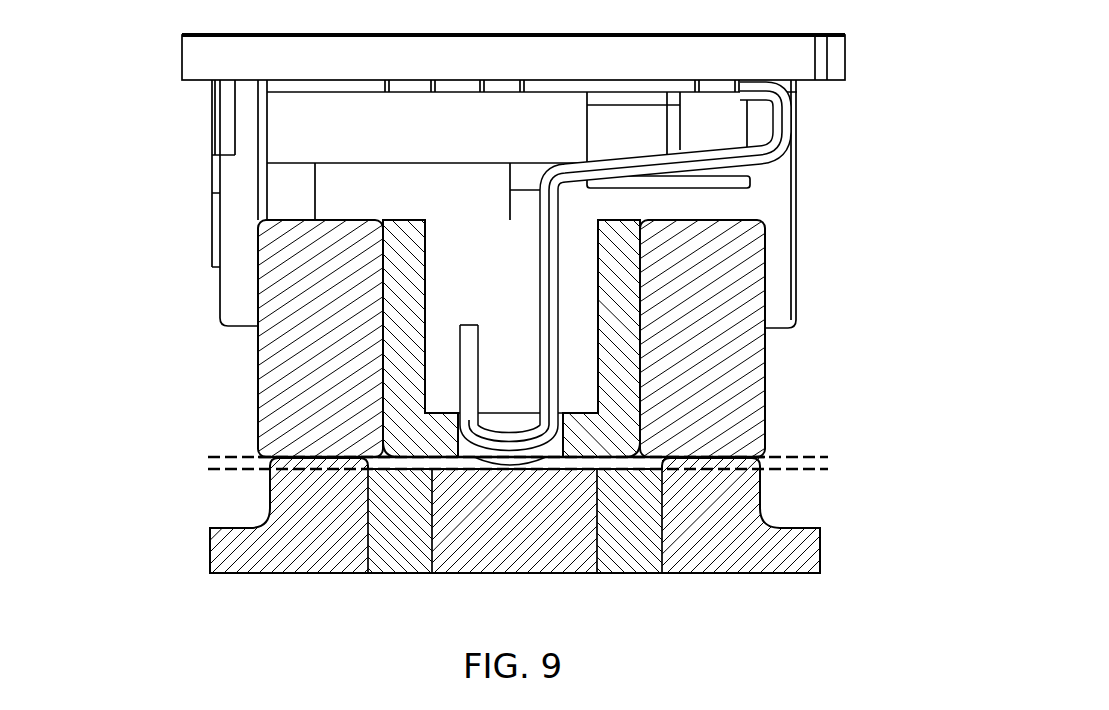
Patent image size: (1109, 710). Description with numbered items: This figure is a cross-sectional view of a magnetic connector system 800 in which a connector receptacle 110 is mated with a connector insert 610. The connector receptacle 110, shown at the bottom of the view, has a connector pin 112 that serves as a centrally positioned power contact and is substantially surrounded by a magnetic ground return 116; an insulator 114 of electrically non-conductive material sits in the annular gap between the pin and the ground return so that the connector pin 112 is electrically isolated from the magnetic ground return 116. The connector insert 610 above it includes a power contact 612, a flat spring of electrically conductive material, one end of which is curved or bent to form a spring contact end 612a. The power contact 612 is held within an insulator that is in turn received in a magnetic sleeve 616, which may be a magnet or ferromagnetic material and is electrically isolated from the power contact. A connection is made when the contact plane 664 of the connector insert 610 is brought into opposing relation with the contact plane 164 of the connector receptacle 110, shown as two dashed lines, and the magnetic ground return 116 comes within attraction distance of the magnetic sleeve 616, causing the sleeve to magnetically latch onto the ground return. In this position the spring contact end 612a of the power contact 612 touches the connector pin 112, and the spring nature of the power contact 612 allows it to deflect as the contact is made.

The magnetic connector system 800 is at (180, 272).
The connector insert 610 is at (770, 377).
The power contact 612 is at (548, 345).
The spring contact end 612a is at (517, 470).
The magnetic sleeve 616 is at (275, 405).
The contact plane 664 is at (808, 457).
The contact plane 164 is at (216, 470).
The connector receptacle 110 is at (339, 580).
The connector pin 112 is at (455, 562).
The insulator 114 is at (617, 565).
The magnetic ground return 116 is at (717, 562).